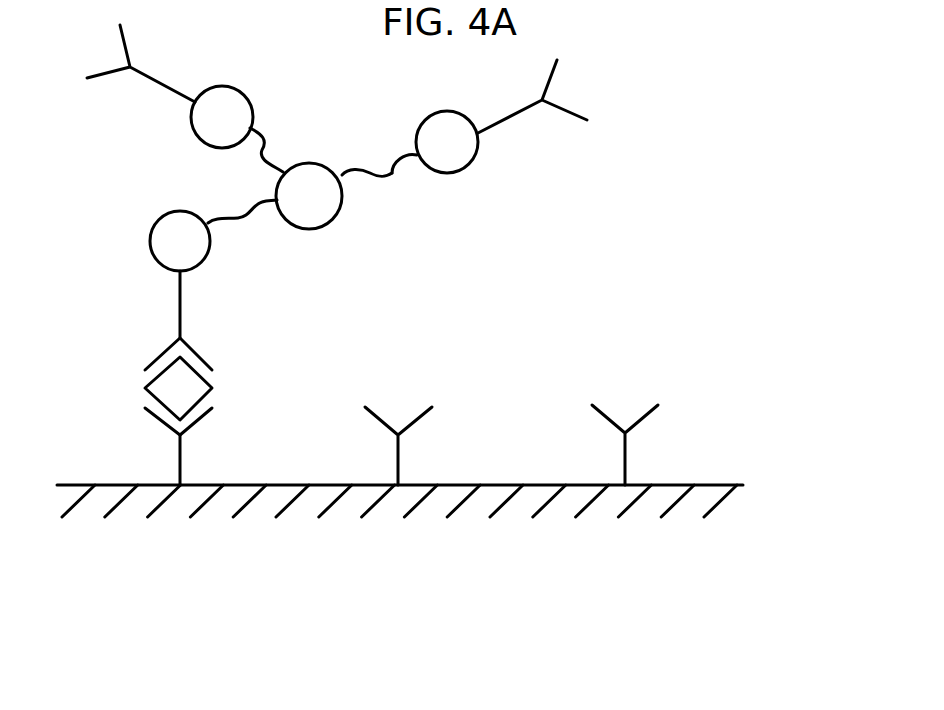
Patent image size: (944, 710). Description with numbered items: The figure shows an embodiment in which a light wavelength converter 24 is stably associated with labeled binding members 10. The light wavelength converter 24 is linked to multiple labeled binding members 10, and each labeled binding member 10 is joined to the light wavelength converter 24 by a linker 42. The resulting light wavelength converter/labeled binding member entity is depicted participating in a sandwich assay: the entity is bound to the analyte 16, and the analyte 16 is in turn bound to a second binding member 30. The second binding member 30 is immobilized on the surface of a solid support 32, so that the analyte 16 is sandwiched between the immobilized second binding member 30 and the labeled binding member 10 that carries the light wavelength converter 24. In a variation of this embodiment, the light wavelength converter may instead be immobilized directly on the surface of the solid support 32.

The labeled binding member 10 is at (505, 120).
The light wavelength converter 24 is at (327, 225).
The linker 42 is at (392, 173).
The analyte 16 is at (212, 388).
The second binding member 30 is at (178, 452).
The solid support 32 is at (275, 497).